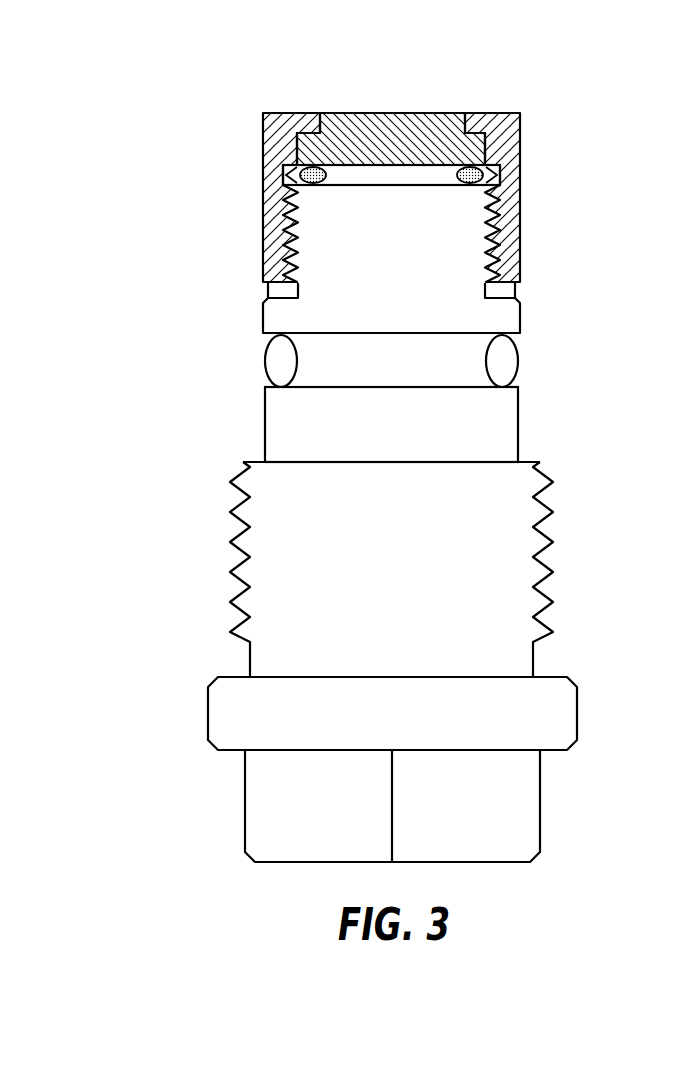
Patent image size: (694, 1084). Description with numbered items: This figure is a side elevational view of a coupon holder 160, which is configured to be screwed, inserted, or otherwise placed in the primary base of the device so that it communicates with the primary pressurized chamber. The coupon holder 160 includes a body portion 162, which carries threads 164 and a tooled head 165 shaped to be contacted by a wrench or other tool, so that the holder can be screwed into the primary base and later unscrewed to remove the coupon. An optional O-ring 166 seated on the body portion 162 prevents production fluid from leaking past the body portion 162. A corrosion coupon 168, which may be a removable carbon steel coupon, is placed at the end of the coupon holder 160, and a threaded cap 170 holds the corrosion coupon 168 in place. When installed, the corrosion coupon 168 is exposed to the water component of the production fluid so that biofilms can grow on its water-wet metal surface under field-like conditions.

The coupon holder 160 is at (421, 458).
The body portion 162 is at (265, 437).
The threads 164 is at (234, 579).
The tooled head 165 is at (246, 803).
The O-ring 166 is at (266, 361).
The corrosion coupon 168 is at (350, 112).
The threaded cap 170 is at (263, 168).